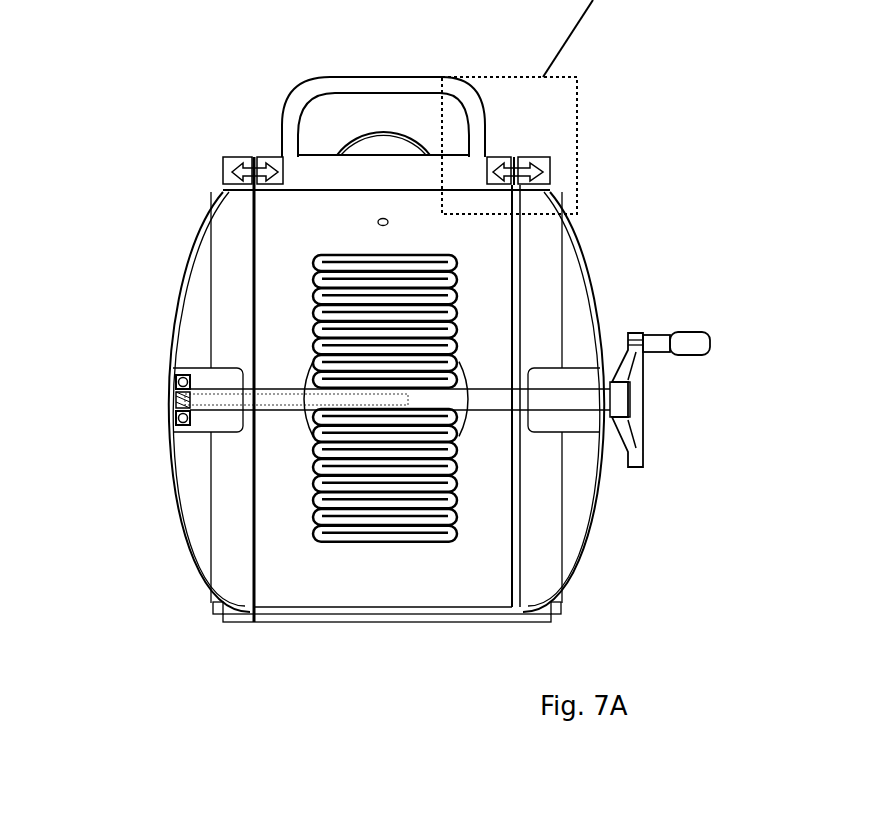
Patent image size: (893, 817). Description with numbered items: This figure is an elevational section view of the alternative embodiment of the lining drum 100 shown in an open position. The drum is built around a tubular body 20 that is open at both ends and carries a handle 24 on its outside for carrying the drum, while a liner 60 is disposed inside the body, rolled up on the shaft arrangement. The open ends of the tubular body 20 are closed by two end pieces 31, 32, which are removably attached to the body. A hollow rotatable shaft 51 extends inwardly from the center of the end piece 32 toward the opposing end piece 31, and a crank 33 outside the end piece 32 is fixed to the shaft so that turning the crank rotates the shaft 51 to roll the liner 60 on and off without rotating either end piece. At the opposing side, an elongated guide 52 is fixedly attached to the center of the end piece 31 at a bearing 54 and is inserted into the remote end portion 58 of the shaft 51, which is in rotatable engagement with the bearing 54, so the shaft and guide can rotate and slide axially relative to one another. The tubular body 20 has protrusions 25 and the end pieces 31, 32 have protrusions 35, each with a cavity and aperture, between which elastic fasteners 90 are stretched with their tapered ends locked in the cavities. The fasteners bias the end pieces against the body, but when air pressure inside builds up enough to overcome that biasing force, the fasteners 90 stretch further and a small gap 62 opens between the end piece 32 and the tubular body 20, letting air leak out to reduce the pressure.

The tubular body 20 is at (313, 573).
The handle 24 is at (386, 90).
The protrusions 25 is at (333, 170).
The end piece 31 is at (172, 312).
The end piece 32 is at (600, 264).
The crank 33 is at (672, 330).
The protrusions 35 is at (236, 157).
The rotatable shaft 51 is at (482, 393).
The elongated guide 52 is at (176, 415).
The bearing 54 is at (178, 380).
The remote end portion 58 is at (177, 398).
The liner 60 is at (318, 262).
The gap 62 is at (514, 155).
The elastic fastener 90 is at (228, 168).
The lining drum 100 is at (627, 230).